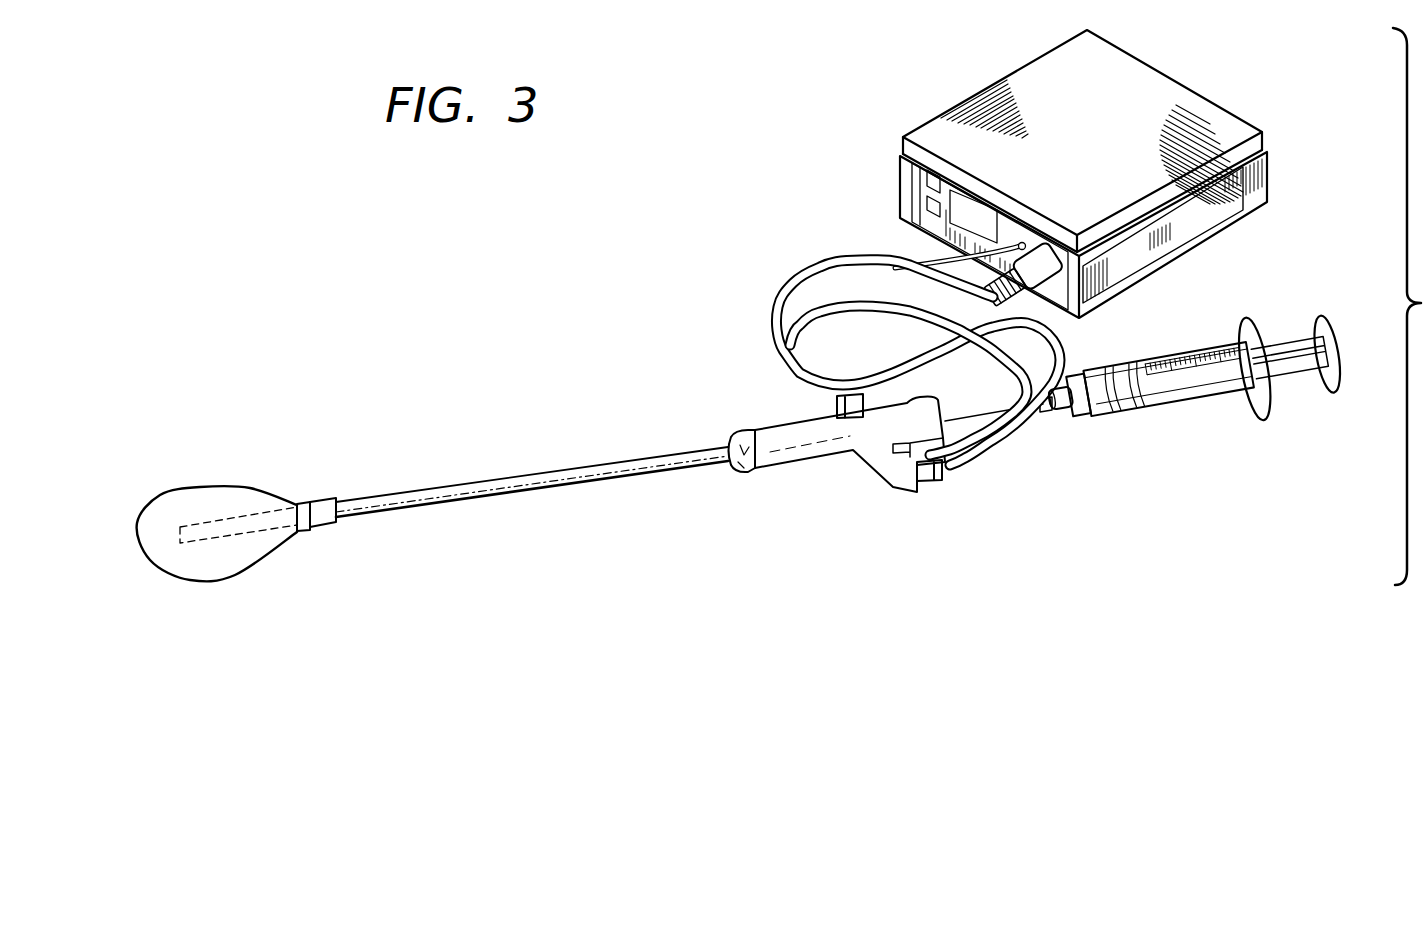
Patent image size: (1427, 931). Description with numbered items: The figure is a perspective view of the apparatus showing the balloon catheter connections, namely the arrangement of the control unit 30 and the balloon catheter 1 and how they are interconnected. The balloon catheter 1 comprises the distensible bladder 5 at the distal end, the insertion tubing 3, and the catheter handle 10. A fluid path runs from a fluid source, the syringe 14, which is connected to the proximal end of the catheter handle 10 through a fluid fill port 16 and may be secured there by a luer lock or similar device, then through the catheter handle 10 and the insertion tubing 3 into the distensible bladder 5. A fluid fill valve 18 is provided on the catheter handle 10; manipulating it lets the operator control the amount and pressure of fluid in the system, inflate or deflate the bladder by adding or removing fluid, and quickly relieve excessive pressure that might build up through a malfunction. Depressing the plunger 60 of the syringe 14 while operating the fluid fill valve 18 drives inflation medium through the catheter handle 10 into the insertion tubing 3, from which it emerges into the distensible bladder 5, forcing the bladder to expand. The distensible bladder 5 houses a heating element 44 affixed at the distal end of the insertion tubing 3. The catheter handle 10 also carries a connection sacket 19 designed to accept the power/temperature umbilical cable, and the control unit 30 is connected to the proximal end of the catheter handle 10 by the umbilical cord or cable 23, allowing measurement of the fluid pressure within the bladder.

The balloon catheter 1 is at (488, 508).
The insertion tubing 3 is at (444, 489).
The distensible bladder 5 is at (221, 568).
The catheter handle 10 is at (737, 473).
The syringe 14 is at (1175, 396).
The fluid fill port 16 is at (940, 413).
The fluid fill valve 18 is at (835, 407).
The connection sacket 19 is at (925, 492).
The cable 23 is at (1020, 440).
The control unit 30 is at (1116, 177).
The heating element 44 is at (233, 527).
The plunger 60 is at (1344, 345).